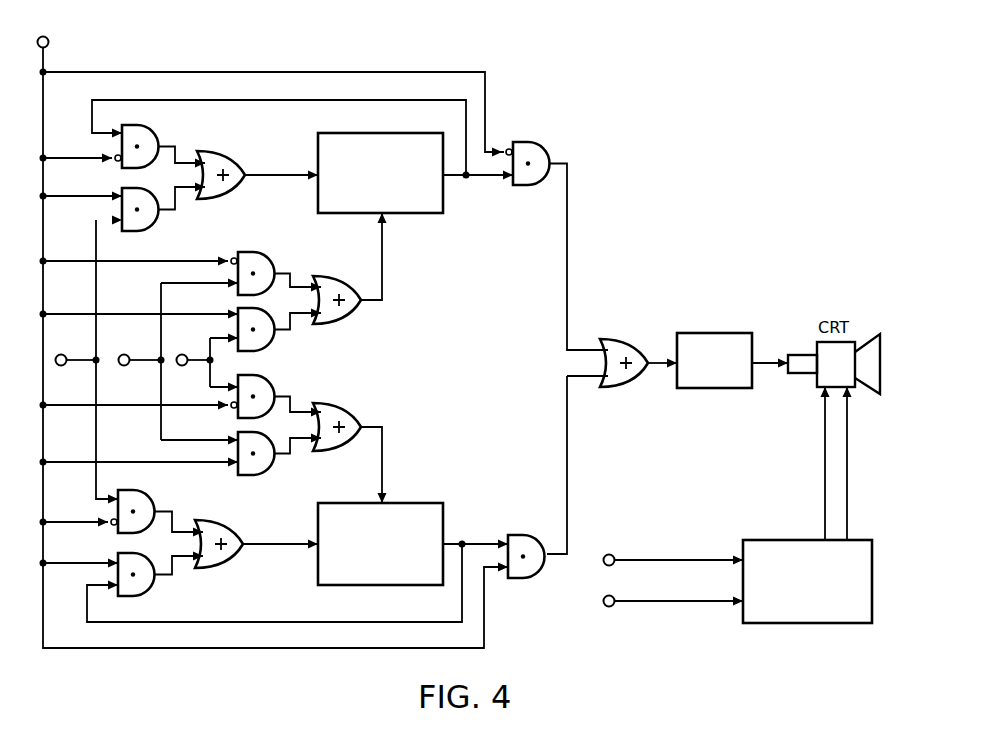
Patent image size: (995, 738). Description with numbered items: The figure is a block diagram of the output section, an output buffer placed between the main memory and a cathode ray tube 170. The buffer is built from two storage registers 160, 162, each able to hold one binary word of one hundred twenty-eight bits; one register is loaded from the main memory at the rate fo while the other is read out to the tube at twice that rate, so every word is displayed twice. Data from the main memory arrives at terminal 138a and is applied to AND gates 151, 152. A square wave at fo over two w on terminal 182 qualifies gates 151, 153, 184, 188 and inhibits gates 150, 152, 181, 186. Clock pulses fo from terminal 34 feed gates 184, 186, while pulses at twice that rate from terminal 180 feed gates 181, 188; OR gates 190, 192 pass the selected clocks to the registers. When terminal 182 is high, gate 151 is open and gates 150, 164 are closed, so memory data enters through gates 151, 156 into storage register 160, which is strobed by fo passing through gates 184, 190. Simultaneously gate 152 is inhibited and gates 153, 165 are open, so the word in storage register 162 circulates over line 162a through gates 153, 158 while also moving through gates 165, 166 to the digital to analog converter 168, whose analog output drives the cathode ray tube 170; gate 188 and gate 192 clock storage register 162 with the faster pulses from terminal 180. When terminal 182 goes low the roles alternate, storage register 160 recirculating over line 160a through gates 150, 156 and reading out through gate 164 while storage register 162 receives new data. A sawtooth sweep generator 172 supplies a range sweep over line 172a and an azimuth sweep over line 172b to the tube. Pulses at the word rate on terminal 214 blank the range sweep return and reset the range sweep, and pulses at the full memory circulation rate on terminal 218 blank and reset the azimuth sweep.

The terminal 182 is at (49, 43).
The line 160a is at (400, 75).
The AND gate 150 is at (146, 131).
The AND gate 151 is at (160, 226).
The OR gate 156 is at (230, 161).
The storage register 160 is at (405, 215).
The AND gate 164 is at (532, 188).
The terminal 138a is at (70, 340).
The terminal 180 is at (131, 340).
The terminal 34 is at (184, 354).
The AND gate 181 is at (268, 253).
The AND gate 184 is at (271, 346).
The AND gate 186 is at (271, 380).
The AND gate 188 is at (255, 480).
The OR gate 190 is at (348, 312).
The OR gate 192 is at (358, 410).
The AND gate 152 is at (146, 494).
The AND gate 153 is at (157, 591).
The OR gate 158 is at (238, 560).
The storage register 162 is at (405, 505).
The line 162a is at (352, 621).
The AND gate 165 is at (523, 535).
The OR gate 166 is at (620, 340).
The digital to analog converter 168 is at (713, 333).
The cathode ray tube 170 is at (793, 375).
The sawtooth sweep generator 172 is at (818, 625).
The line 172a is at (823, 447).
The line 172b is at (846, 479).
The terminal 214 is at (604, 565).
The terminal 218 is at (604, 606).